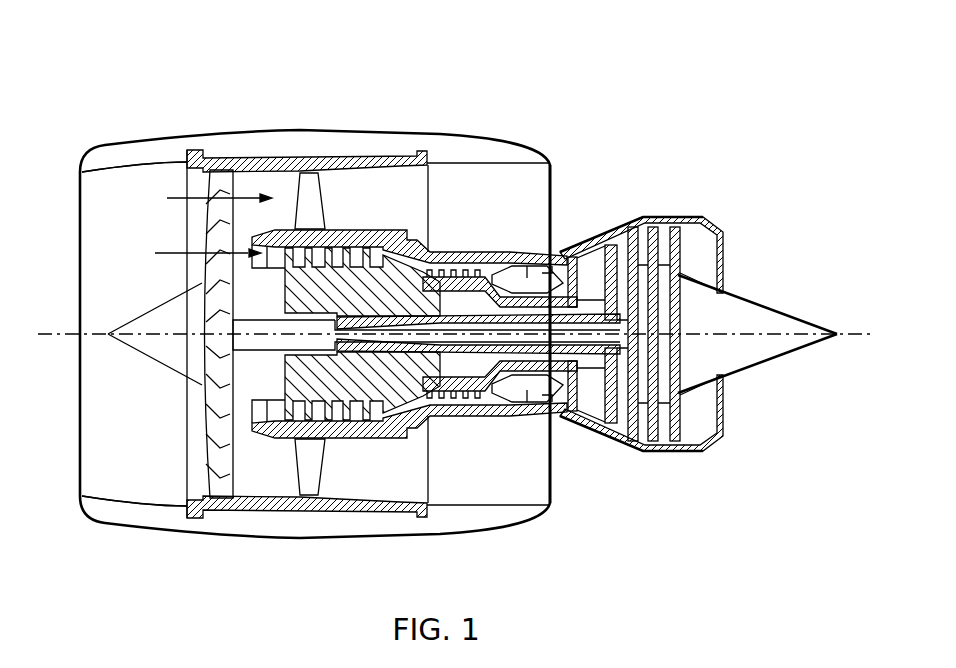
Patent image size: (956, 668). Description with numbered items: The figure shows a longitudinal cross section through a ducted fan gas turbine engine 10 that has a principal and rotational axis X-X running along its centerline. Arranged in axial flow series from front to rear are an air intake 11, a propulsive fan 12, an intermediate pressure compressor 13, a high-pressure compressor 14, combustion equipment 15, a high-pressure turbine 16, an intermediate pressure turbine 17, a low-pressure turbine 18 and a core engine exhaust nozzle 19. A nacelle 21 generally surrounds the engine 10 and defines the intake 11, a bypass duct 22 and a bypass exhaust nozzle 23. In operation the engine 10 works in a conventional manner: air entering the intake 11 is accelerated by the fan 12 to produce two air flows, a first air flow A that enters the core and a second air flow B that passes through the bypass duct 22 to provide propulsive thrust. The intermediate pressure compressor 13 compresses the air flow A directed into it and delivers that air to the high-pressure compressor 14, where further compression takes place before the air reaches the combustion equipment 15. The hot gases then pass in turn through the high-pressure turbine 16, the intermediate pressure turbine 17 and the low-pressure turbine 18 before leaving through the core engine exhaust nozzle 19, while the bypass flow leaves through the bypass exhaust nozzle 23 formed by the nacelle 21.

The ducted fan gas turbine engine 10 is at (454, 280).
The air intake 11 is at (130, 163).
The propulsive fan 12 is at (213, 458).
The intermediate pressure compressor 13 is at (350, 414).
The high-pressure compressor 14 is at (463, 261).
The combustion equipment 15 is at (517, 403).
The high-pressure turbine 16 is at (567, 420).
The intermediate pressure turbine 17 is at (603, 242).
The low-pressure turbine 18 is at (618, 446).
The core engine exhaust nozzle 19 is at (711, 217).
The nacelle 21 is at (352, 144).
The bypass duct 22 is at (506, 201).
The bypass exhaust nozzle 23 is at (553, 160).